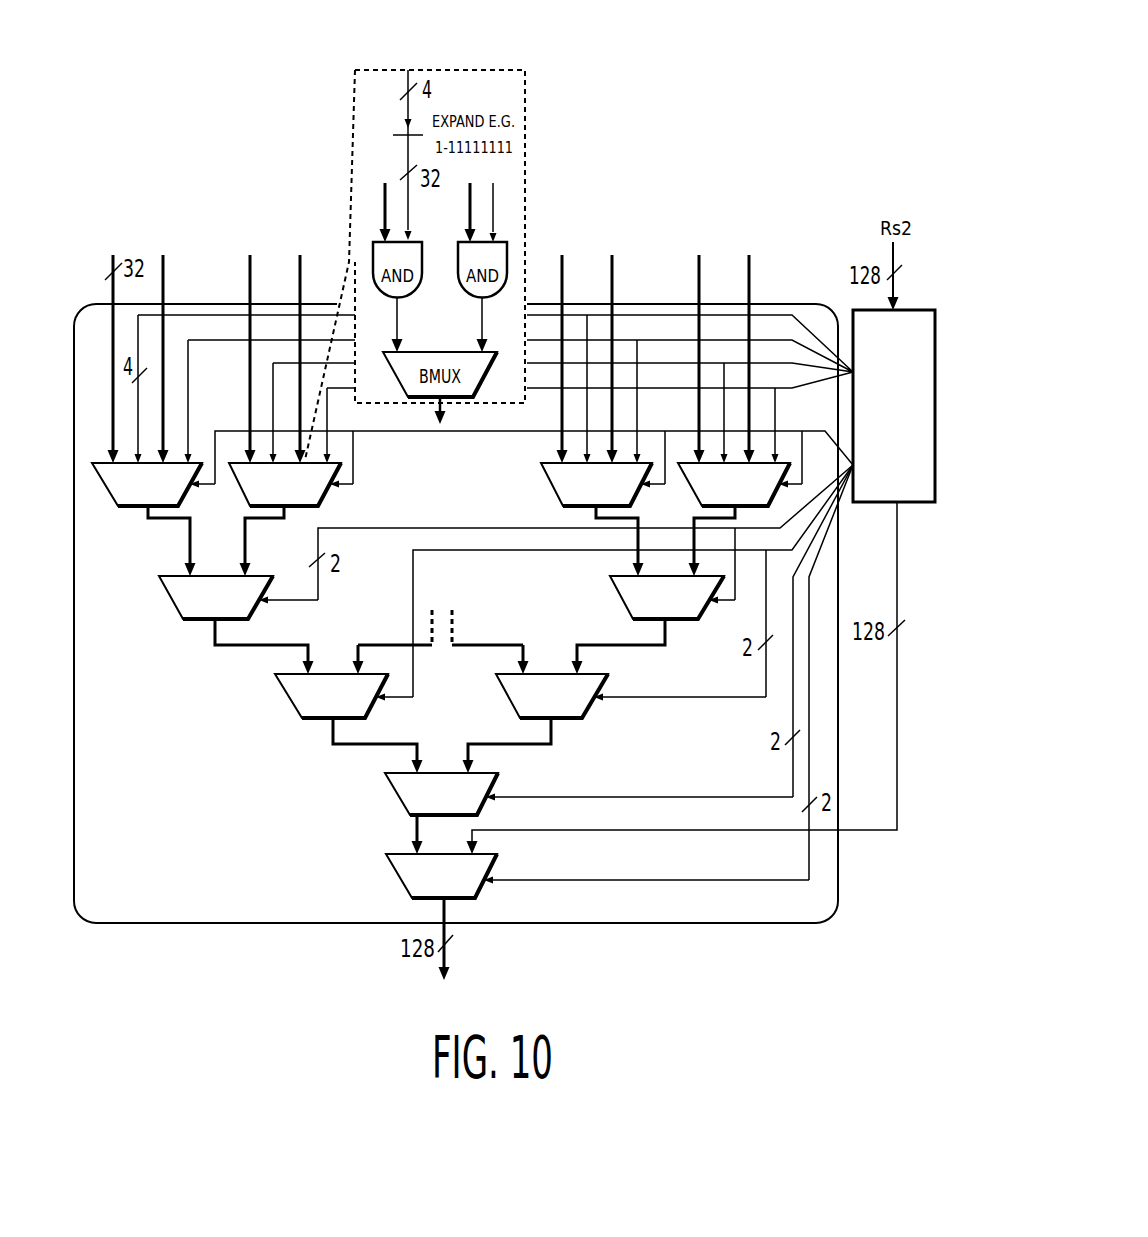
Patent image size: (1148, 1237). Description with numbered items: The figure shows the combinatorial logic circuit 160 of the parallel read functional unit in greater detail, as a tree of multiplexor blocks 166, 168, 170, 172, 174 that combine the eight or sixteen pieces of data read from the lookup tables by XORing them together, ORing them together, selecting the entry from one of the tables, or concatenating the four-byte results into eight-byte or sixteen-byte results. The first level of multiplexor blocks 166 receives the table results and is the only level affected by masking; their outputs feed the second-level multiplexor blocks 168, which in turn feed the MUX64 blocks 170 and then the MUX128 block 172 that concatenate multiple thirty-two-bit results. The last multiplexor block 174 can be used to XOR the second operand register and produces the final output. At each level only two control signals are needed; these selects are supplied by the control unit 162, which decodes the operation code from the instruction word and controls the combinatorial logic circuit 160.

The combinatorial logic circuit 160 is at (806, 50).
The control unit 162 is at (918, 503).
The multiplexor block 166 is at (120, 507).
The multiplexor block 168 is at (181, 614).
The MUX64 multiplexor block 170 is at (294, 706).
The MUX128 multiplexor block 172 is at (401, 800).
The multiplexor block 174 is at (405, 886).